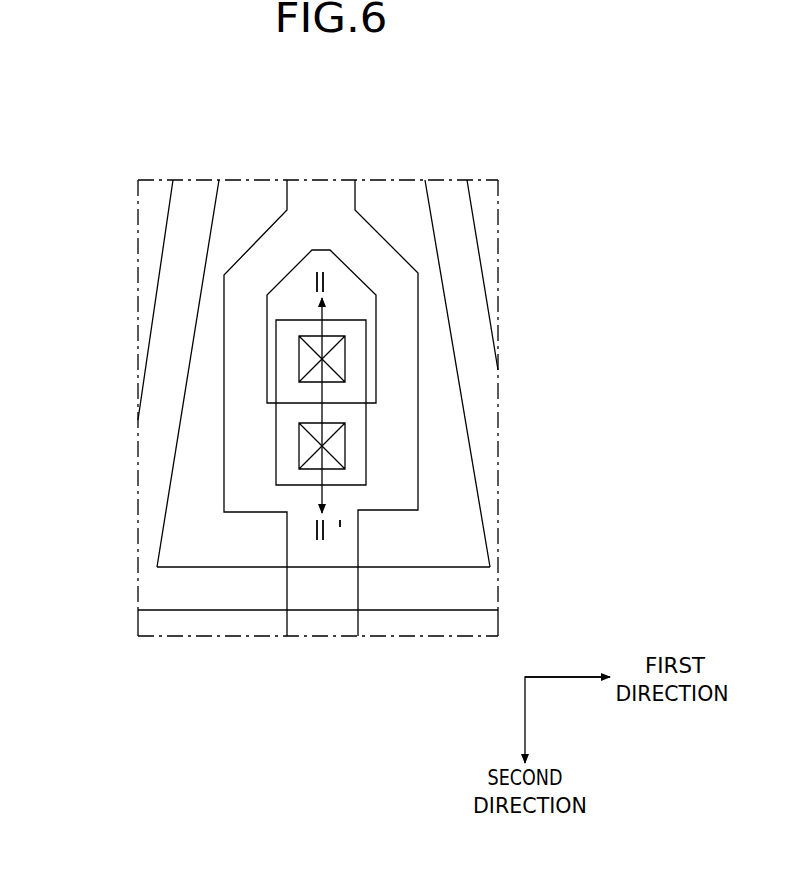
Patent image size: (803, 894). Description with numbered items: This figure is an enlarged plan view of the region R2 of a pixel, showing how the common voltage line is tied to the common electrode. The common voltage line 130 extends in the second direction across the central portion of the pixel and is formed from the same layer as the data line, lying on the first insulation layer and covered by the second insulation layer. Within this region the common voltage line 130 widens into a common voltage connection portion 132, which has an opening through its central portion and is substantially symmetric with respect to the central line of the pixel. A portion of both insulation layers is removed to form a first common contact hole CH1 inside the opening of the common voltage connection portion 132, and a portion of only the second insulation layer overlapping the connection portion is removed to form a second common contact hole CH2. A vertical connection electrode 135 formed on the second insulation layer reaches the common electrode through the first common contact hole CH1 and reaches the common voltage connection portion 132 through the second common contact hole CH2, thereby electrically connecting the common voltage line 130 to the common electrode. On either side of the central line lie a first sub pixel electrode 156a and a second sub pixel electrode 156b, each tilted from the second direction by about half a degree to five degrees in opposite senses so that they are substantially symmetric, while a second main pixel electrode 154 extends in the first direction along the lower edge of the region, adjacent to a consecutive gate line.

The region R2 is at (498, 180).
The second main pixel electrode 154 is at (423, 592).
The first sub pixel electrode 156a is at (195, 205).
The second sub pixel electrode 156b is at (450, 205).
The common voltage line 130 is at (321, 205).
The common voltage connection portion 132 is at (390, 450).
The vertical connection electrode 135 is at (345, 392).
The first common contact hole CH1 is at (299, 356).
The second common contact hole CH2 is at (299, 445).